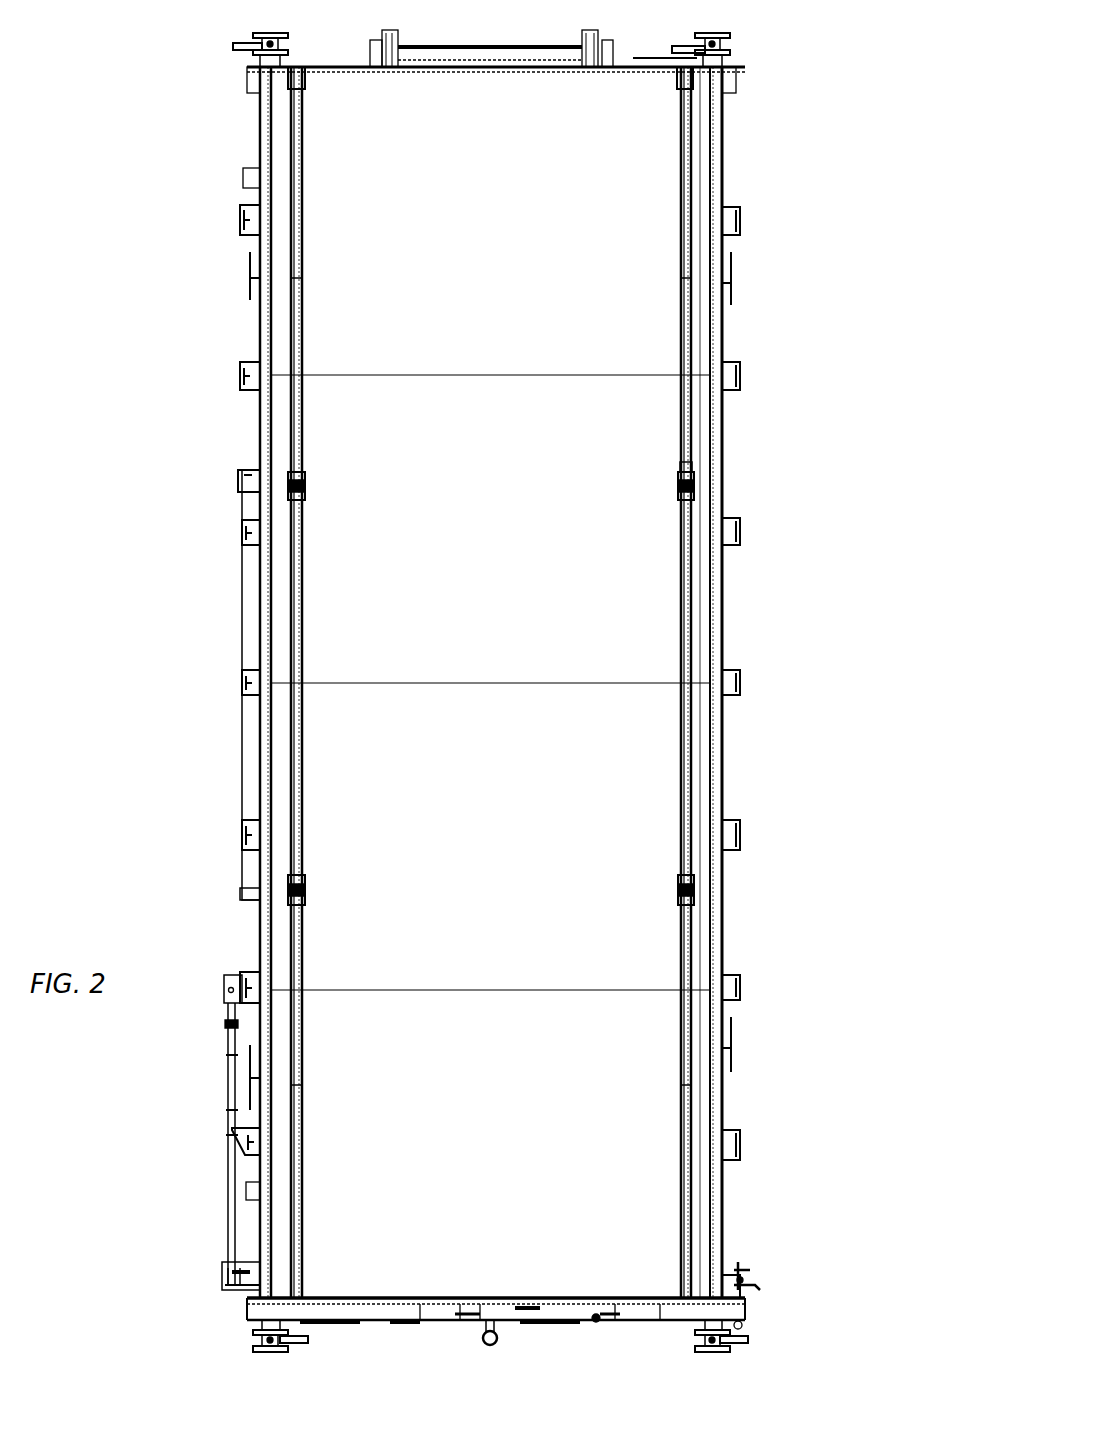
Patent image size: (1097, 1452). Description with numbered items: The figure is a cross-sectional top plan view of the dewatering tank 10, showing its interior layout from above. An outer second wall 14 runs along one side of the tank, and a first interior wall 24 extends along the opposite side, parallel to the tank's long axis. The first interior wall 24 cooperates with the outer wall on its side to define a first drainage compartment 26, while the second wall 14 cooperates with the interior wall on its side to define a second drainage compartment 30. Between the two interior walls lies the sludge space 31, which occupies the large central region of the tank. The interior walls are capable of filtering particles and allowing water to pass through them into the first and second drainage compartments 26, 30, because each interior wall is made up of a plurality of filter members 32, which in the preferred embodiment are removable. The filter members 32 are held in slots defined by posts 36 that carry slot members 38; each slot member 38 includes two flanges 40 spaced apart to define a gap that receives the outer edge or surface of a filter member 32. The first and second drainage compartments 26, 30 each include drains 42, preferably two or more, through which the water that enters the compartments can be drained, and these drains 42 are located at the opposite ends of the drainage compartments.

The dewatering tank 10 is at (831, 1138).
The second wall 14 is at (722, 480).
The first interior wall 24 is at (282, 737).
The first drainage compartment 26 is at (692, 733).
The second drainage compartment 30 is at (706, 621).
The sludge space 31 is at (504, 632).
The filter member 32 is at (302, 188).
The post 36 is at (305, 490).
The slot member 38 is at (684, 484).
The flange 40 is at (690, 470).
The drain 42 is at (272, 45).